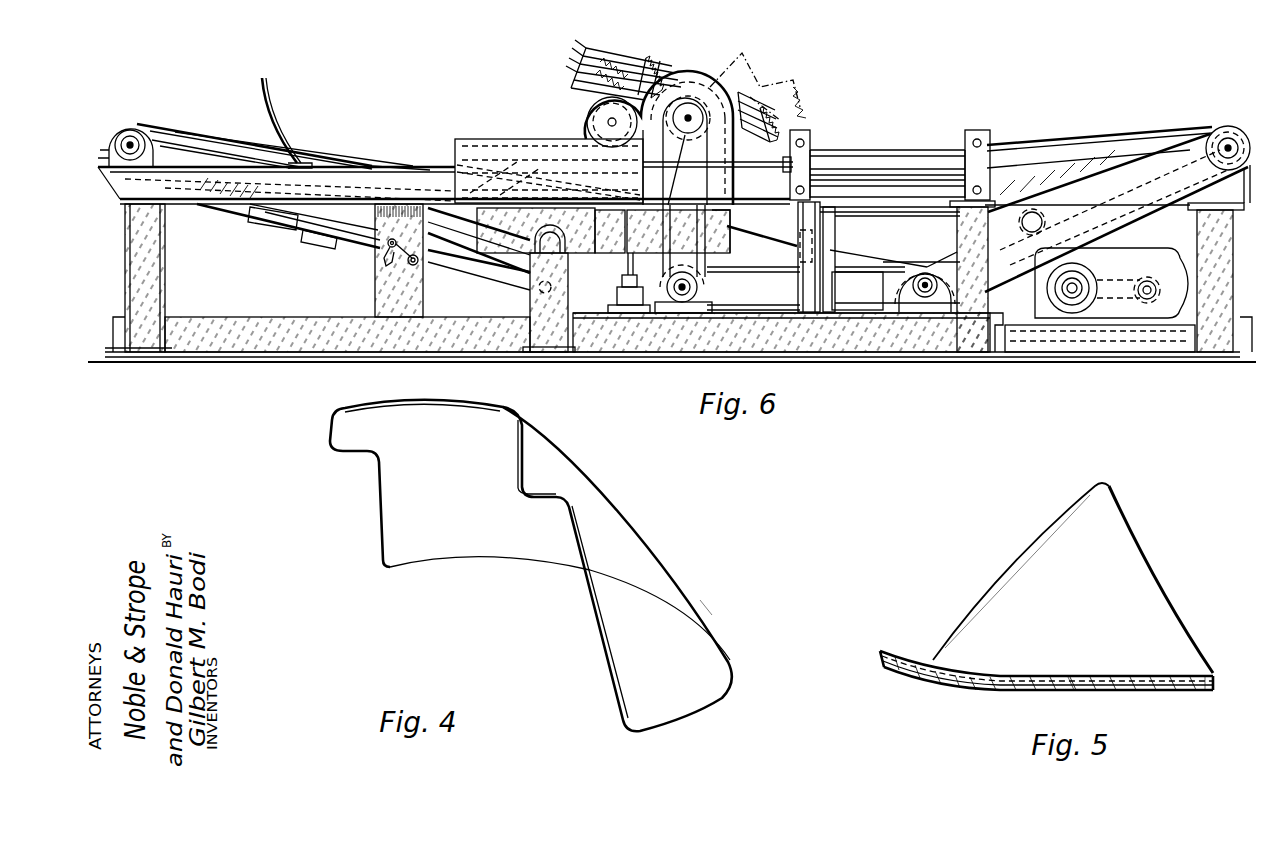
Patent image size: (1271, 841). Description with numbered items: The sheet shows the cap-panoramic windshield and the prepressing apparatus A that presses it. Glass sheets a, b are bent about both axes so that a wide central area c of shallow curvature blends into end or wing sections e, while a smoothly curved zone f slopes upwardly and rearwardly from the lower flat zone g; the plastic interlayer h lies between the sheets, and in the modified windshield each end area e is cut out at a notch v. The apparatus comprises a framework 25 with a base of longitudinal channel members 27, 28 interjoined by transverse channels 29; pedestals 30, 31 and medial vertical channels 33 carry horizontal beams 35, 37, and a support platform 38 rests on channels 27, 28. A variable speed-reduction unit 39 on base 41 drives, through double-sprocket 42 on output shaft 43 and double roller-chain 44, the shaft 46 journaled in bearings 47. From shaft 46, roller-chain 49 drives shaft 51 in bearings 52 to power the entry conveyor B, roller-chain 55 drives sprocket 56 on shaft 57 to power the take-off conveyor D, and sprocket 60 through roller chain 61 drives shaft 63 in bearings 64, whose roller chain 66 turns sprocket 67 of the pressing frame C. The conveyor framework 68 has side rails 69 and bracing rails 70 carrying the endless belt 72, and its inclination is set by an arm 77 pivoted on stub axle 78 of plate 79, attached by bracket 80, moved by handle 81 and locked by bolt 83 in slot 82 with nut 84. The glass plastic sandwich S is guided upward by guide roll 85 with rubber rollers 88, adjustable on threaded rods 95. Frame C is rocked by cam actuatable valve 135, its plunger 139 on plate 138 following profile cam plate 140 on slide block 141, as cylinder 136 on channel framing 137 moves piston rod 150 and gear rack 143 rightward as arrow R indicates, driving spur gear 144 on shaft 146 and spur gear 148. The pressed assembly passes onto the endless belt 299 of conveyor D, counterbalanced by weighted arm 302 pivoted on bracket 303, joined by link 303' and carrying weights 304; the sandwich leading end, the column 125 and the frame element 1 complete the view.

In FIG. 6, the framework 25 is at (240, 338).
In FIG. 6, the channel member 27 is at (287, 338).
In FIG. 6, the channel member 28 is at (619, 343).
In FIG. 6, the transversely arranged channel 29 is at (113, 318).
In FIG. 6, the pedestal 30 is at (150, 282).
In FIG. 6, the pedestal 31 is at (1212, 227).
In FIG. 6, the vertically disposed channel 33 is at (829, 237).
In FIG. 6, the beam 35 is at (243, 206).
In FIG. 6, the beam 37 is at (1066, 178).
In FIG. 6, the support platform 38 is at (745, 318).
In FIG. 6, the variable speed-reduction unit 39 is at (1112, 258).
In FIG. 6, the base 41 is at (1112, 345).
In FIG. 6, the double-sprocket 42 is at (1149, 283).
In FIG. 6, the output shaft 43 is at (1157, 291).
In FIG. 6, the double roller-chain 44 is at (1000, 307).
In FIG. 6, the shaft 46 is at (922, 278).
In FIG. 6, the bearing 47 is at (937, 302).
In FIG. 6, the roller-chain 49 is at (233, 141).
In FIG. 6, the shaft 51 is at (131, 130).
In FIG. 6, the bearing 52 is at (118, 140).
In FIG. 6, the roller-chain 55 is at (1154, 165).
In FIG. 6, the sprocket 56 is at (1216, 125).
In FIG. 6, the shaft 57 is at (1230, 126).
In FIG. 6, the sprocket 60 is at (931, 263).
In FIG. 6, the roller chain 61 is at (752, 268).
In FIG. 6, the shaft 63 is at (681, 296).
In FIG. 6, the bearing 64 is at (690, 300).
In FIG. 6, the roller chain 66 is at (704, 283).
In FIG. 6, the sprocket 67 is at (659, 138).
In FIG. 6, the framework 68 is at (447, 242).
In FIG. 6, the side rail 69 is at (454, 252).
In FIG. 6, the bracing rail 70 is at (307, 236).
In FIG. 6, the endless belt 72 is at (207, 147).
In FIG. 6, the arm 77 is at (492, 278).
In FIG. 6, the stub axle 78 is at (412, 254).
In FIG. 6, the plate 79 is at (401, 302).
In FIG. 6, the bracket 80 is at (553, 288).
In FIG. 6, the handle 81 is at (273, 220).
In FIG. 6, the slot 82 is at (390, 266).
In FIG. 6, the bolt 83 is at (385, 257).
In FIG. 6, the nut 84 is at (387, 246).
In FIG. 6, the guide roll 85 is at (620, 271).
In FIG. 6, the rubber roller 88 is at (710, 225).
In FIG. 6, the threaded rod 95 is at (634, 266).
In FIG. 6, the column 125 is at (551, 335).
In FIG. 6, the cam actuatable valve 135 is at (617, 242).
In FIG. 6, the cylinder 136 is at (846, 168).
In FIG. 6, the channel framing 137 is at (894, 192).
In FIG. 6, the plate 138 is at (718, 246).
In FIG. 6, the plunger 139 is at (548, 244).
In FIG. 6, the profile cam plate 140 is at (508, 246).
In FIG. 6, the slide block 141 is at (457, 144).
In FIG. 6, the gear rack 143 is at (520, 140).
In FIG. 6, the spur gear 144 is at (594, 120).
In FIG. 6, the shaft 146 is at (605, 118).
In FIG. 6, the spur gear 148 is at (745, 76).
In FIG. 6, the piston rod 150 is at (677, 170).
In FIG. 6, the endless belt 299 is at (1046, 148).
In FIG. 6, the weighted arm 302 is at (888, 260).
In FIG. 6, the bracket 303 is at (865, 308).
In FIG. 6, the link 303' is at (878, 254).
In FIG. 6, the weight 304 is at (1002, 345).
In FIG. 6, the cutter shaft 1 is at (692, 121).
In FIG. 6, the prepressing apparatus A is at (410, 120).
In FIG. 6, the entry conveyor B is at (186, 134).
In FIG. 6, the frame C is at (621, 52).
In FIG. 6, the take-off conveyor D is at (1028, 143).
In FIG. 6, the arrow R is at (702, 38).
In FIG. 6, the glass plastic sandwich S is at (283, 118).
In FIG. 5, the glass plastic sandwich S is at (1062, 513).
In FIG. 4, the end or wing section e is at (400, 515).
In FIG. 5, the end or wing section e is at (1103, 561).
In FIG. 4, the curved zone f is at (578, 444).
In FIG. 5, the curved zone f is at (931, 664).
In FIG. 4, the notch v is at (362, 462).
In FIG. 4, the central area c is at (652, 598).
In FIG. 5, the central area c is at (1160, 677).
In FIG. 4, the flat zone g is at (695, 598).
In FIG. 5, the flat zone g is at (1071, 672).
In FIG. 5, the glass sheet a is at (1108, 690).
In FIG. 5, the glass sheet b is at (1099, 676).
In FIG. 5, the plastic interlayer h is at (1175, 689).